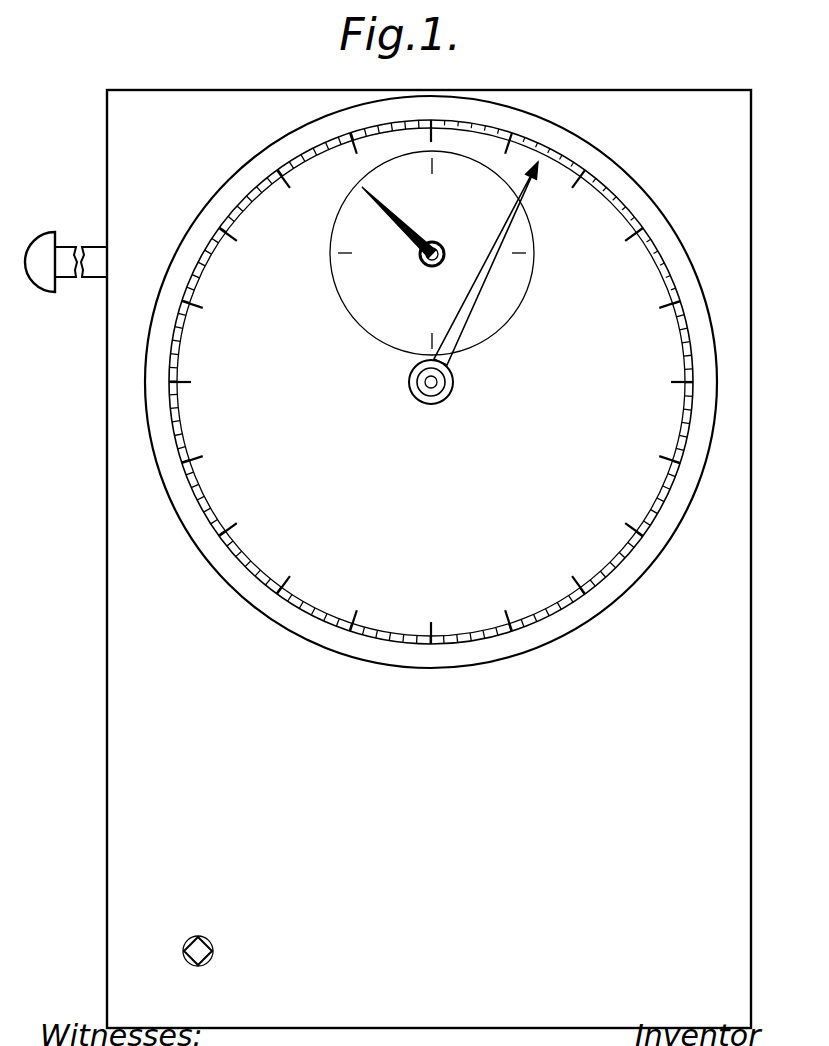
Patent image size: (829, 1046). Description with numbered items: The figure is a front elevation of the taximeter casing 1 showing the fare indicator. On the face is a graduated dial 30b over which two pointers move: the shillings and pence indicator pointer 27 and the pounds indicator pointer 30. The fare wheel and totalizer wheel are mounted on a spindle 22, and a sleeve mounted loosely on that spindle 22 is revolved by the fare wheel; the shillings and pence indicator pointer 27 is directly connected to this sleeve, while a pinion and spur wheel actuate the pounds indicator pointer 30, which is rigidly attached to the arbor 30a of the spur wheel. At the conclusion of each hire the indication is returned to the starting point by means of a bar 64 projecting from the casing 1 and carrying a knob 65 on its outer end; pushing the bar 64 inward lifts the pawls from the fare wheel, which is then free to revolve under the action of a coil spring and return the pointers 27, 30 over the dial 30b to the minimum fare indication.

The casing 1 is at (429, 559).
The spindle 22 is at (419, 383).
The shillings and pence indicator pointer 27 is at (455, 336).
The pounds indicator pointer 30 is at (406, 238).
The arbor 30a is at (422, 262).
The graduated dial 30b is at (358, 558).
The bar 64 is at (93, 250).
The knob 65 is at (42, 246).